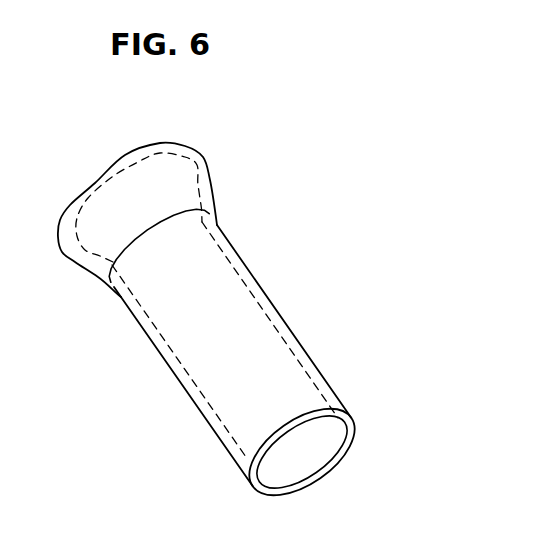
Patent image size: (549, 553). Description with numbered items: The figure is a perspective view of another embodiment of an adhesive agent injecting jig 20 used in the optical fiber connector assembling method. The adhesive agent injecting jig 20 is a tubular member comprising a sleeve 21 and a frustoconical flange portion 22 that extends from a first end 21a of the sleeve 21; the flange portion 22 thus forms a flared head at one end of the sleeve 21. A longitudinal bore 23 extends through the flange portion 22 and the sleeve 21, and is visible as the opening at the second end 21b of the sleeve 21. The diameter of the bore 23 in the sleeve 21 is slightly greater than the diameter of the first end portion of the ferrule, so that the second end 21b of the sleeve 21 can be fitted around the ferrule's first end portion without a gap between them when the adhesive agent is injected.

The adhesive agent injecting jig 20 is at (298, 252).
The sleeve 21 is at (250, 322).
The first end of the sleeve 21a is at (217, 225).
The second end of the sleeve 21b is at (356, 427).
The frustoconical flange portion 22 is at (203, 157).
The longitudinal bore 23 is at (312, 455).